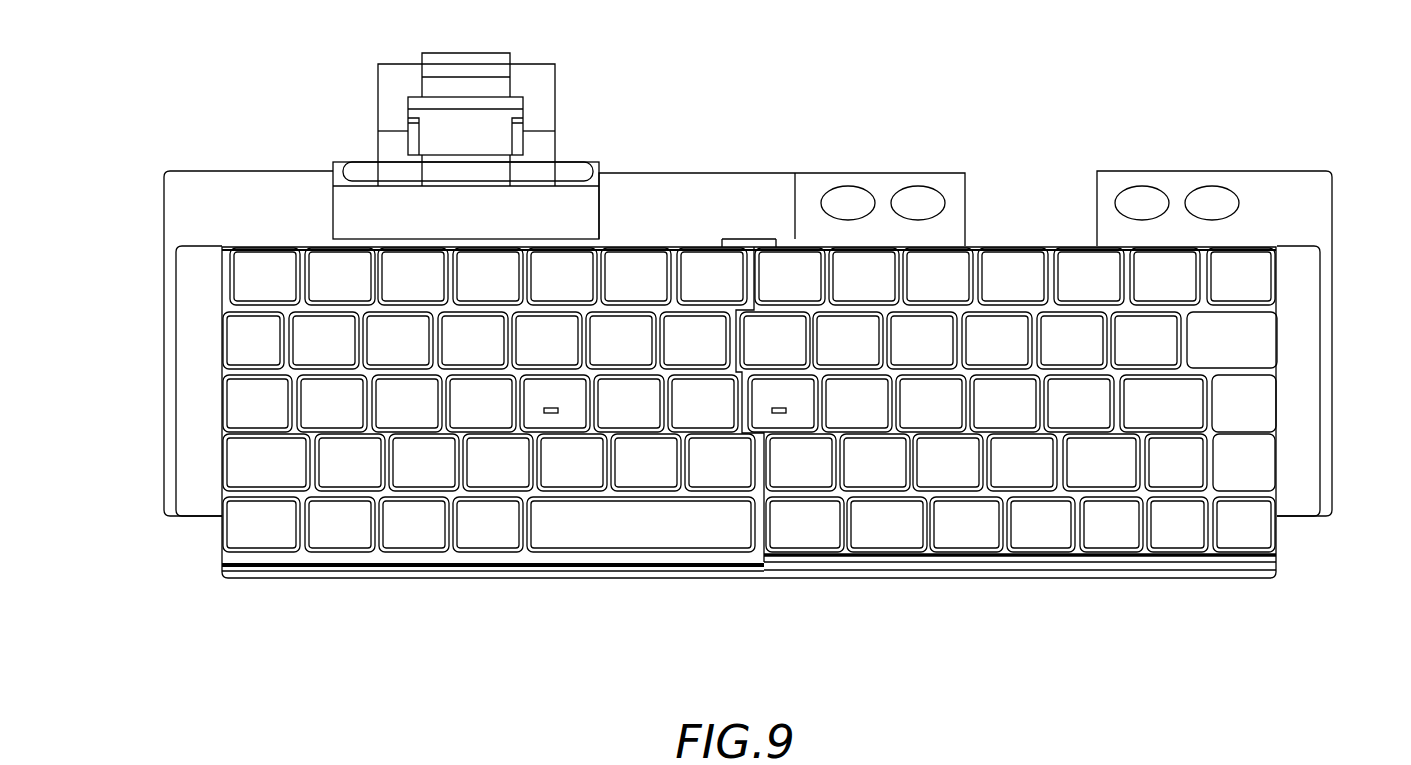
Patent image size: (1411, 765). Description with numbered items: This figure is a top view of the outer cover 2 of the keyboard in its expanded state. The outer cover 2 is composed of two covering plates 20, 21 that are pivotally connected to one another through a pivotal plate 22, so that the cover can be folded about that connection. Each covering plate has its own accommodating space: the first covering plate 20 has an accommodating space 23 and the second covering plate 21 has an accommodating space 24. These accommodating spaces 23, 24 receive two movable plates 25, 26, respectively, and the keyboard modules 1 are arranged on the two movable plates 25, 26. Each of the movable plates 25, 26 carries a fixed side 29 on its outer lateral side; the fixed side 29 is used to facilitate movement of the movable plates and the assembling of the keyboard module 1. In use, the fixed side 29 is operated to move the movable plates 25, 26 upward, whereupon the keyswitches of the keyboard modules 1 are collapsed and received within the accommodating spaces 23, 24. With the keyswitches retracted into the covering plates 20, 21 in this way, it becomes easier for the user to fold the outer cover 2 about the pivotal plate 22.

The keyboard module 1 is at (1026, 220).
The outer cover 2 is at (836, 150).
The covering plate 20 is at (202, 188).
The covering plate 21 is at (1280, 197).
The pivotal plate 22 is at (738, 240).
The accommodating space 23 is at (187, 472).
The accommodating space 24 is at (1302, 510).
The movable plate 25 is at (228, 556).
The movable plate 26 is at (1277, 558).
The fixed side 29 is at (318, 574).